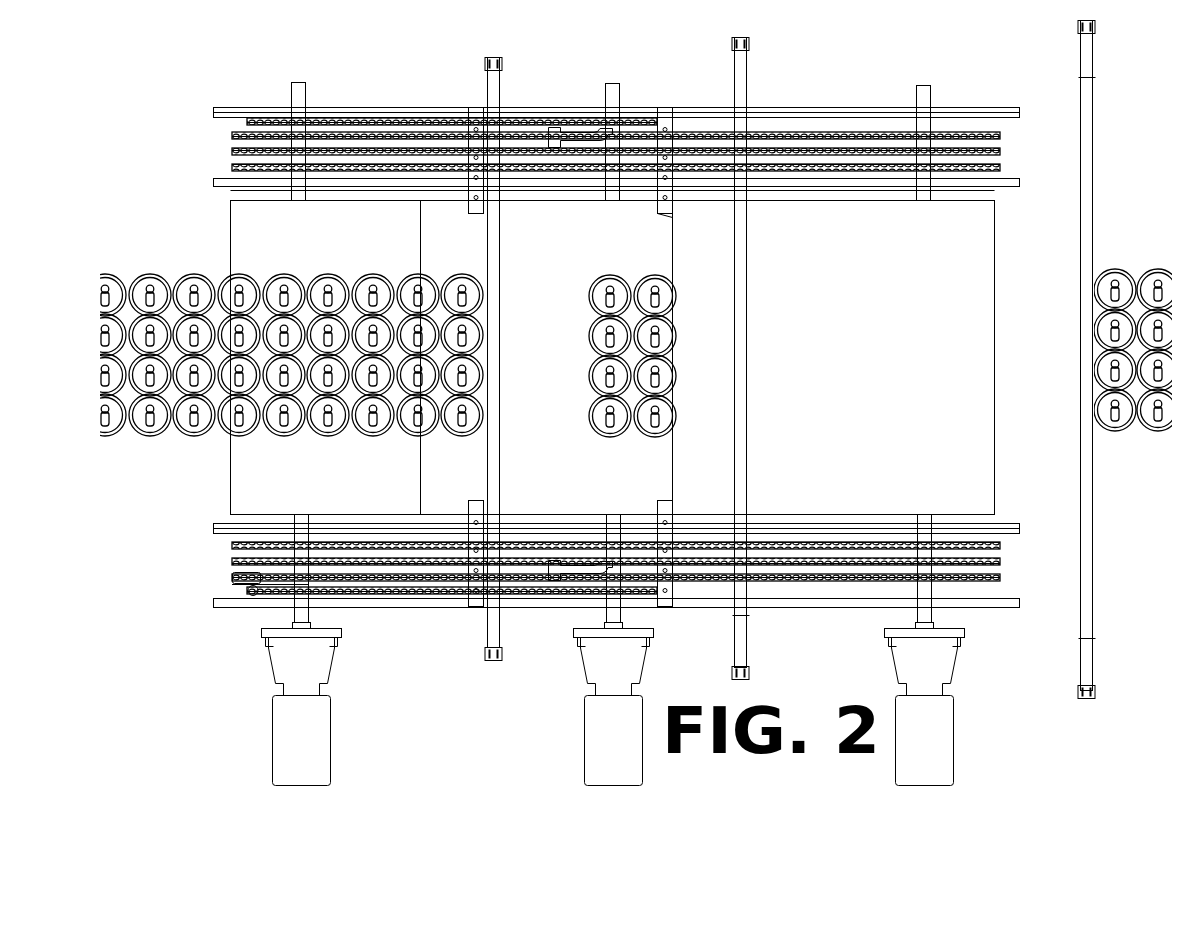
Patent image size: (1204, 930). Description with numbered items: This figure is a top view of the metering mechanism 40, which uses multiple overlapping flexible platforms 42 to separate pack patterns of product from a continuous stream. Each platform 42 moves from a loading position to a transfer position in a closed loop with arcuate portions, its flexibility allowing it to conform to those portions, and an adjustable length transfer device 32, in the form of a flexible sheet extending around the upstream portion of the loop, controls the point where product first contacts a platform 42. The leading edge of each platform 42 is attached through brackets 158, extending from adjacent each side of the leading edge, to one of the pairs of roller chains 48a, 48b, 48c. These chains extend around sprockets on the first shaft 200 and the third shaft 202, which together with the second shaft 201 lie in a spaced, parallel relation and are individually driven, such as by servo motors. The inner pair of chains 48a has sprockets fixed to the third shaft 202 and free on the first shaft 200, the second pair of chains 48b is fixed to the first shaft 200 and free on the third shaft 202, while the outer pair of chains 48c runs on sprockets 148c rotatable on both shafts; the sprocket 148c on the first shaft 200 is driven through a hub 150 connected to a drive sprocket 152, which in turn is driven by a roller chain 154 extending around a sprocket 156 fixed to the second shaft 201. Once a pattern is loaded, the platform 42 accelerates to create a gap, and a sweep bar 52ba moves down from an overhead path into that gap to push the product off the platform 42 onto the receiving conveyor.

The metering mechanism 40 is at (166, 86).
The adjustable length transfer device 32 is at (292, 243).
The flexible platform 42 is at (467, 247).
The first pair of roller chains 48a is at (1000, 172).
The second pair of roller chains 48b is at (1000, 155).
The third pair of roller chains 48c is at (232, 136).
The sweep bar 52ba is at (492, 93).
The sprocket 148c is at (248, 575).
The hub 150 is at (300, 584).
The drive sprocket 152 is at (263, 594).
The roller chain 154 is at (403, 118).
The sprocket 156 is at (612, 128).
The bracket 158 is at (475, 125).
The first shaft 200 is at (301, 92).
The second shaft 201 is at (612, 92).
The third shaft 202 is at (920, 95).